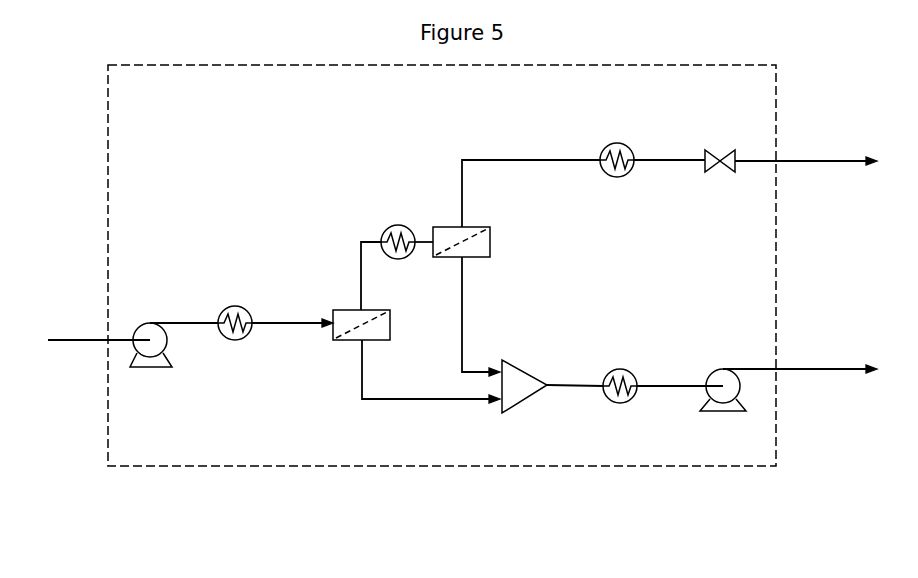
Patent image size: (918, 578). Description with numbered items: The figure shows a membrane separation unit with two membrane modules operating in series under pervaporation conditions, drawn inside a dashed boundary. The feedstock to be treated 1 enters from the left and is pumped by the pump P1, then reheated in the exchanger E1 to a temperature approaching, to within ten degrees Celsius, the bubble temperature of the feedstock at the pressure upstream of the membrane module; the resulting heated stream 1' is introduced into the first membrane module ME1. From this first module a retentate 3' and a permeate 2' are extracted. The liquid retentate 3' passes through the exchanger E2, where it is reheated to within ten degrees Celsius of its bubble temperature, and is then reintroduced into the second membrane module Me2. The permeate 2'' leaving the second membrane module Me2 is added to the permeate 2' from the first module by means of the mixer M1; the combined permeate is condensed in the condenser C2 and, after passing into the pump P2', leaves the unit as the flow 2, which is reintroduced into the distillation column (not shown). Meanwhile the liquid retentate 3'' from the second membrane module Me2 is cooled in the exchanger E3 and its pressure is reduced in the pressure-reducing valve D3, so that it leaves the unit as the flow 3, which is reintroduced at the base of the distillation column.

The feedstock to be treated 1 is at (99, 318).
The pressurized heated feed stream 1' is at (292, 346).
The pump P1 is at (151, 332).
The exchanger E1 is at (235, 311).
The first membrane module ME1 is at (377, 341).
The retentate 3' is at (346, 274).
The exchanger E2 is at (398, 229).
The second membrane module Me2 is at (492, 246).
The liquid retentate 3'' is at (531, 171).
The exchanger E3 is at (617, 147).
The pressure-reducing valve D3 is at (719, 145).
The flow 3 is at (806, 141).
The permeate 2'' is at (492, 316).
The permeate 2' is at (431, 395).
The mixer M1 is at (524, 403).
The condenser C2 is at (620, 406).
The pump P2' is at (723, 406).
The flow 2 is at (800, 350).